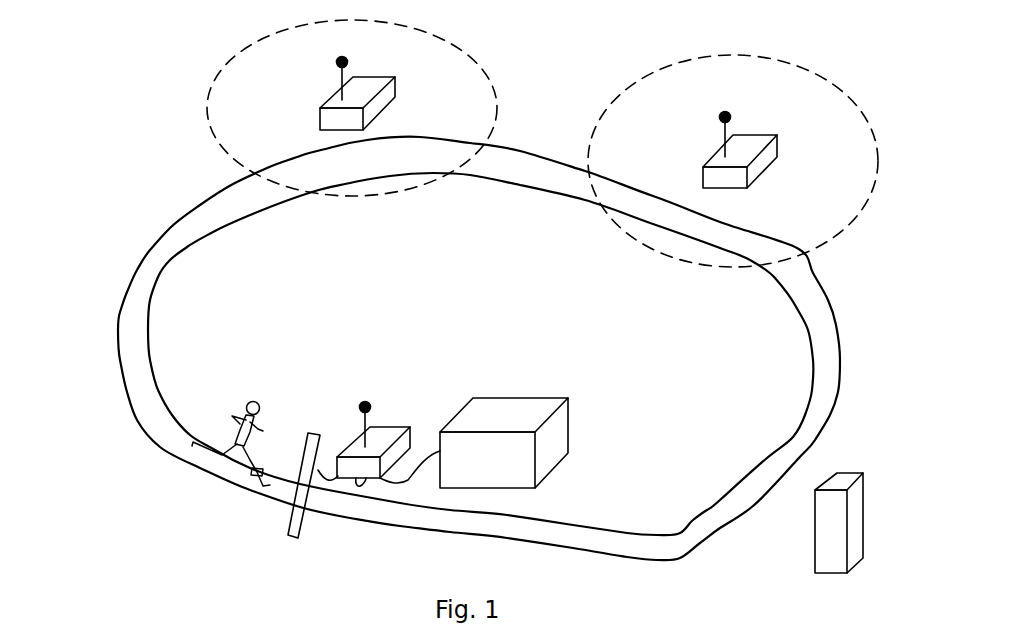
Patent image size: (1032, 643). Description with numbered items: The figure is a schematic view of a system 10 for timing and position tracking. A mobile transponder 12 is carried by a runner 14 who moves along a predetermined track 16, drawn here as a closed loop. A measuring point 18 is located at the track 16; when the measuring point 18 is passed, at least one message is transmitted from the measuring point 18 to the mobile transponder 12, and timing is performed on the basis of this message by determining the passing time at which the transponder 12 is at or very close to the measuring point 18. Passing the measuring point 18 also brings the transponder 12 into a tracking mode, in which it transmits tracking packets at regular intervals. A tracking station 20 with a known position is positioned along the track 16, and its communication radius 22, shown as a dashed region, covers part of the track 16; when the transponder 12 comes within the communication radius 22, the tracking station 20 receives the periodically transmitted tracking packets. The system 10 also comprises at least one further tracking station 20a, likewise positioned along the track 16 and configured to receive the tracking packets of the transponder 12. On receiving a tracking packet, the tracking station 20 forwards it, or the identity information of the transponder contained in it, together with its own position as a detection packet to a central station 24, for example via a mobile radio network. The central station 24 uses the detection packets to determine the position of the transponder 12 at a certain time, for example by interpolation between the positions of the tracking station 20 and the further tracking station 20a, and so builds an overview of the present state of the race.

The system 10 is at (158, 68).
The mobile transponder 12 is at (253, 469).
The runner 14 is at (188, 485).
The track 16 is at (147, 248).
The measuring point 18 is at (465, 370).
The tracking station 20 is at (777, 147).
The further tracking station 20a is at (395, 88).
The communication radius 22 is at (837, 87).
The central station 24 is at (852, 470).